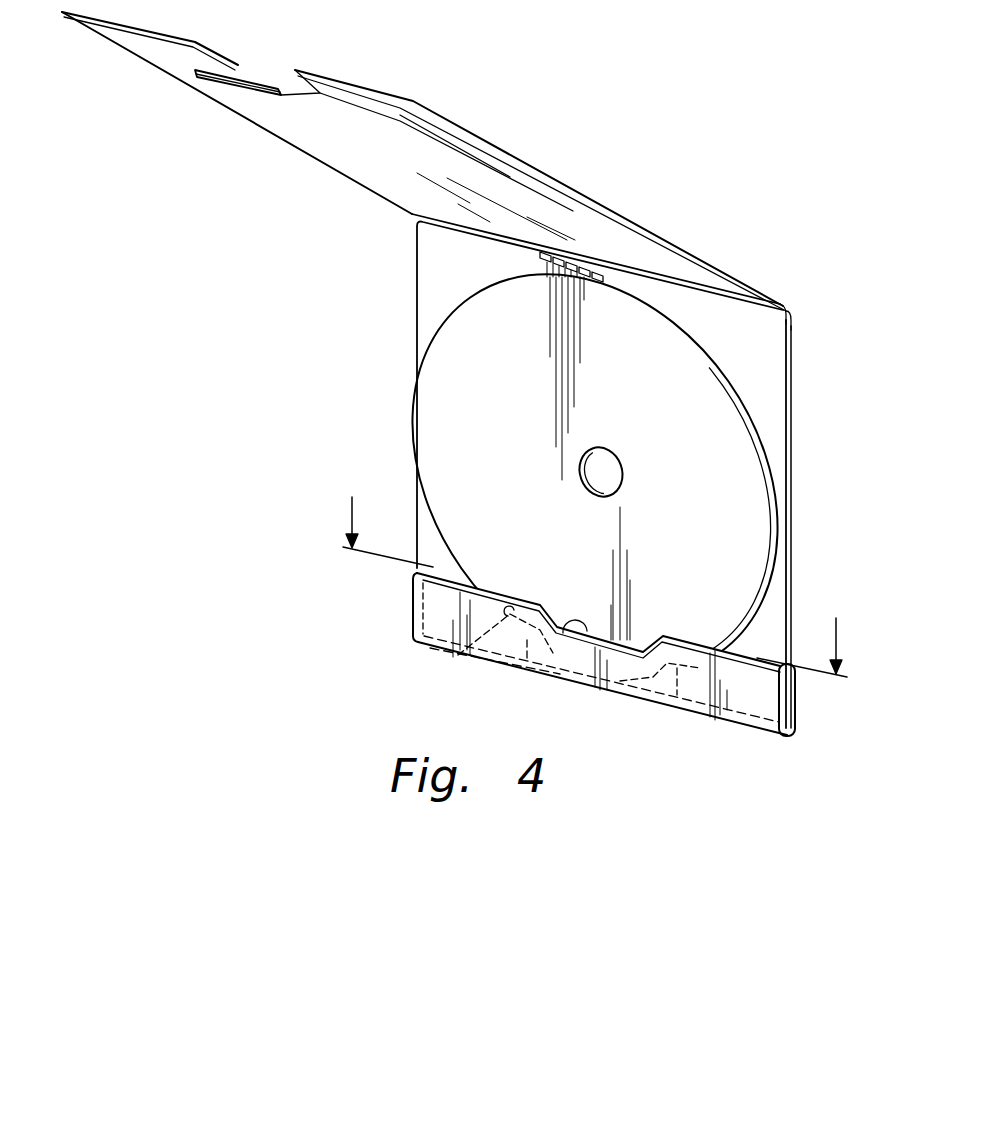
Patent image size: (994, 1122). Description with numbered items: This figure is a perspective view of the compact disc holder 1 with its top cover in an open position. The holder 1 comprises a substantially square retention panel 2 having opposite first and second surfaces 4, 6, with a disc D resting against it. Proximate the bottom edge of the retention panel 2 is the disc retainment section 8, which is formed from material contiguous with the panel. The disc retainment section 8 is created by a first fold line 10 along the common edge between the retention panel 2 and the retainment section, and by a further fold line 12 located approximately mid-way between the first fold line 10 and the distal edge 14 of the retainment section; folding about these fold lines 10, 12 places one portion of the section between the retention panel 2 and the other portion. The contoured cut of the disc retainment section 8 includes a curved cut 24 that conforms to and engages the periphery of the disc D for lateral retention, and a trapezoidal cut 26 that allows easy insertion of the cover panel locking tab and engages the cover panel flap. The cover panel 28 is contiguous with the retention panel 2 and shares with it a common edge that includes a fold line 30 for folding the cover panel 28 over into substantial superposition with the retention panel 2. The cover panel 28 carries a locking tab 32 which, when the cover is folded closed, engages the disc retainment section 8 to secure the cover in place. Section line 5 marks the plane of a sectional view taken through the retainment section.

The compact disc holder 1 is at (745, 220).
The retention panel 2 is at (797, 377).
The first surface 4 is at (773, 418).
The second surface 6 is at (795, 457).
The disc retainment section 8 is at (752, 703).
The first fold line 10 is at (785, 737).
The fold line 12 is at (793, 668).
The distal edge 14 is at (793, 723).
The curved cut 24 is at (458, 655).
The trapezoidal cut 26 is at (562, 635).
The cover panel 28 is at (575, 188).
The fold line 30 is at (790, 312).
The locking tab 32 is at (240, 77).
The section line 5- 5 is at (595, 566).
The disc D is at (672, 507).